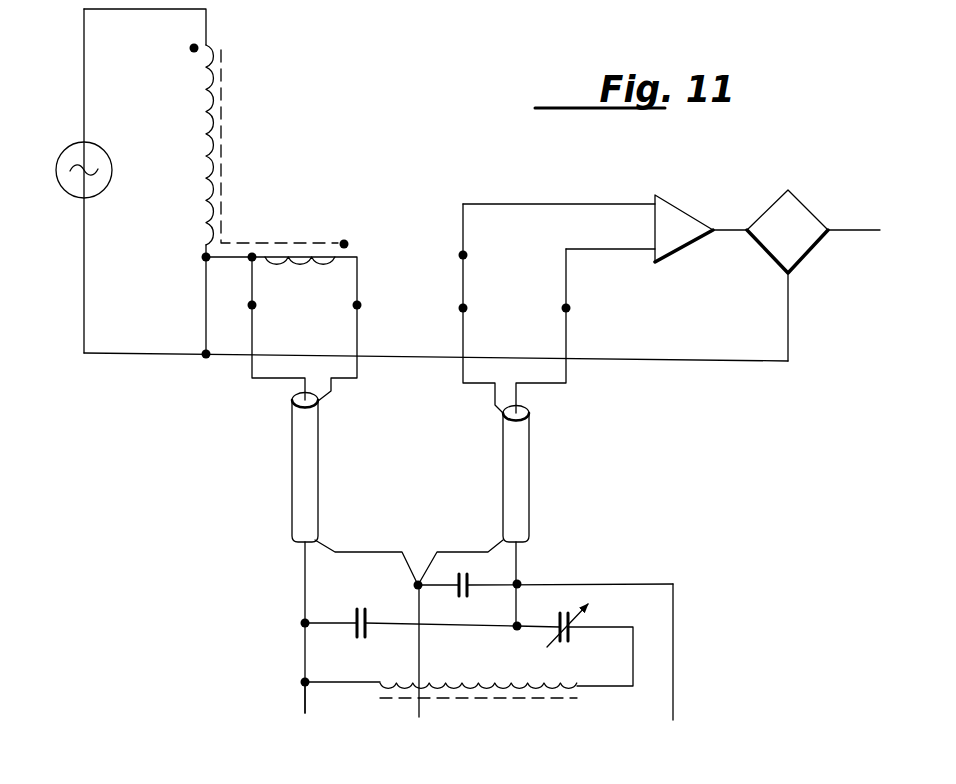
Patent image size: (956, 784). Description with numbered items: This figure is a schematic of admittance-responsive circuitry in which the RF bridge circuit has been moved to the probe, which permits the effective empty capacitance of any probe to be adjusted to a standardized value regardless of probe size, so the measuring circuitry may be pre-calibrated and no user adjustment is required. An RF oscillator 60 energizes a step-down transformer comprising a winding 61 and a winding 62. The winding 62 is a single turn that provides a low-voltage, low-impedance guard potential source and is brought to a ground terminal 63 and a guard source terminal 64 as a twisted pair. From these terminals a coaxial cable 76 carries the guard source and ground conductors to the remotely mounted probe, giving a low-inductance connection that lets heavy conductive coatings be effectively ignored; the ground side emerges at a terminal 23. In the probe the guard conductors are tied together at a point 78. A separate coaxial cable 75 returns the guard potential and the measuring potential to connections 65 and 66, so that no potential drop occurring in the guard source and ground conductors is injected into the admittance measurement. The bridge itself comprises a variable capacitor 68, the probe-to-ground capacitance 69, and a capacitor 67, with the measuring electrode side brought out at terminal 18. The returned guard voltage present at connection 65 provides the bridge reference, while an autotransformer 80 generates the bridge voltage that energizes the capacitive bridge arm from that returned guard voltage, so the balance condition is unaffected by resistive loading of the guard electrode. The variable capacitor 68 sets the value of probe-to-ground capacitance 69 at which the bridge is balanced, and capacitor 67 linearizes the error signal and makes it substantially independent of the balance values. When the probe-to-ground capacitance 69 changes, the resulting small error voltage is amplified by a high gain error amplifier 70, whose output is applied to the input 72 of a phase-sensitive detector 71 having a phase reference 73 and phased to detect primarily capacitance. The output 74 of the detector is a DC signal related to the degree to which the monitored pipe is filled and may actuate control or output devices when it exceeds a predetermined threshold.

The measuring electrode connection 18 is at (674, 703).
The ground terminal connection 23 is at (303, 701).
The RF oscillator 60 is at (72, 156).
The transformer primary winding 61 is at (208, 118).
The transformer secondary winding 62 is at (297, 255).
The ground terminal 63 is at (256, 305).
The guard source terminal 64 is at (355, 306).
The bridge connection 65 is at (466, 310).
The bridge connection 66 is at (569, 310).
The capacitor 67 is at (462, 601).
The variable capacitor 68 is at (582, 622).
The probe-to-ground capacitance 69 is at (363, 604).
The high gain error amplifier 70 is at (681, 250).
The phase-sensitive detector 71 is at (800, 214).
The detector input 72 is at (725, 229).
The phase reference 73 is at (787, 330).
The detector output 74 is at (862, 235).
The coaxial cable 75 is at (525, 489).
The coaxial cable 76 is at (293, 477).
The guard conductor tie point 78 is at (415, 705).
The autotransformer 80 is at (512, 695).